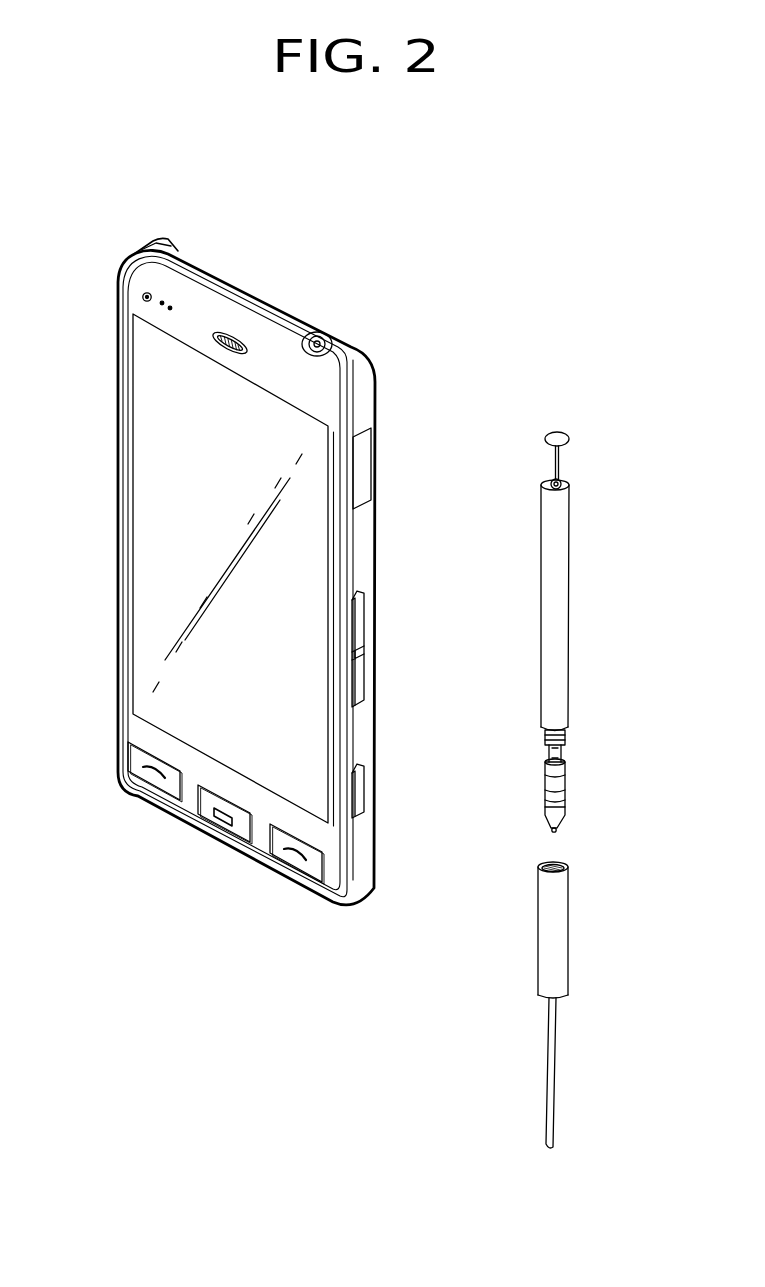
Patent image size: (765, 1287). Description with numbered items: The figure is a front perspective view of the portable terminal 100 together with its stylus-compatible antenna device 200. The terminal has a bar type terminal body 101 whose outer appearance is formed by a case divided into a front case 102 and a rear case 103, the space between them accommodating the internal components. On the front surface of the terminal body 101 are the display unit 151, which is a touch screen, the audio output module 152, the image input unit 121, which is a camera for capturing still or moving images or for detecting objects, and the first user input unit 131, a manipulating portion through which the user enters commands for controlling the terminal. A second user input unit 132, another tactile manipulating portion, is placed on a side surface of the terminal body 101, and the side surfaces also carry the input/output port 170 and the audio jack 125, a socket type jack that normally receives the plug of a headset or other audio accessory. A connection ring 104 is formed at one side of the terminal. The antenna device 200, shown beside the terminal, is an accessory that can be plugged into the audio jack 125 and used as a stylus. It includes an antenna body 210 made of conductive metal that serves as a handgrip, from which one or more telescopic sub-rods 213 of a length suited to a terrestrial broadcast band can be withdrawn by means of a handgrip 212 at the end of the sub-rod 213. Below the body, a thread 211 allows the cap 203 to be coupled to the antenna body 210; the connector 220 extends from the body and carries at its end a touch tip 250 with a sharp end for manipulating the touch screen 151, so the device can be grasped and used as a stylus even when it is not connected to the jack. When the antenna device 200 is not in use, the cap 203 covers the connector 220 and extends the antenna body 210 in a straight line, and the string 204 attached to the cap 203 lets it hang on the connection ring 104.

The portable terminal 100 is at (381, 263).
The terminal body 101 is at (210, 263).
The front case 102 is at (247, 318).
The rear case 103 is at (370, 400).
The connection ring 104 is at (145, 250).
The image input unit 121 is at (142, 299).
The audio jack 125 is at (327, 336).
The first user input unit 131 is at (137, 758).
The second user input unit 132 is at (362, 628).
The display unit 151 is at (140, 482).
The audio output module 152 is at (228, 348).
The input/output port 170 is at (363, 465).
The antenna device 200 is at (646, 599).
The cap 203 is at (560, 942).
The string 204 is at (556, 1090).
The antenna body 210 is at (565, 594).
The thread 211 is at (563, 742).
The handgrip 212 is at (568, 438).
The telescopic sub-rod 213 is at (560, 468).
The connector 220 is at (569, 791).
The touch tip 250 is at (558, 832).